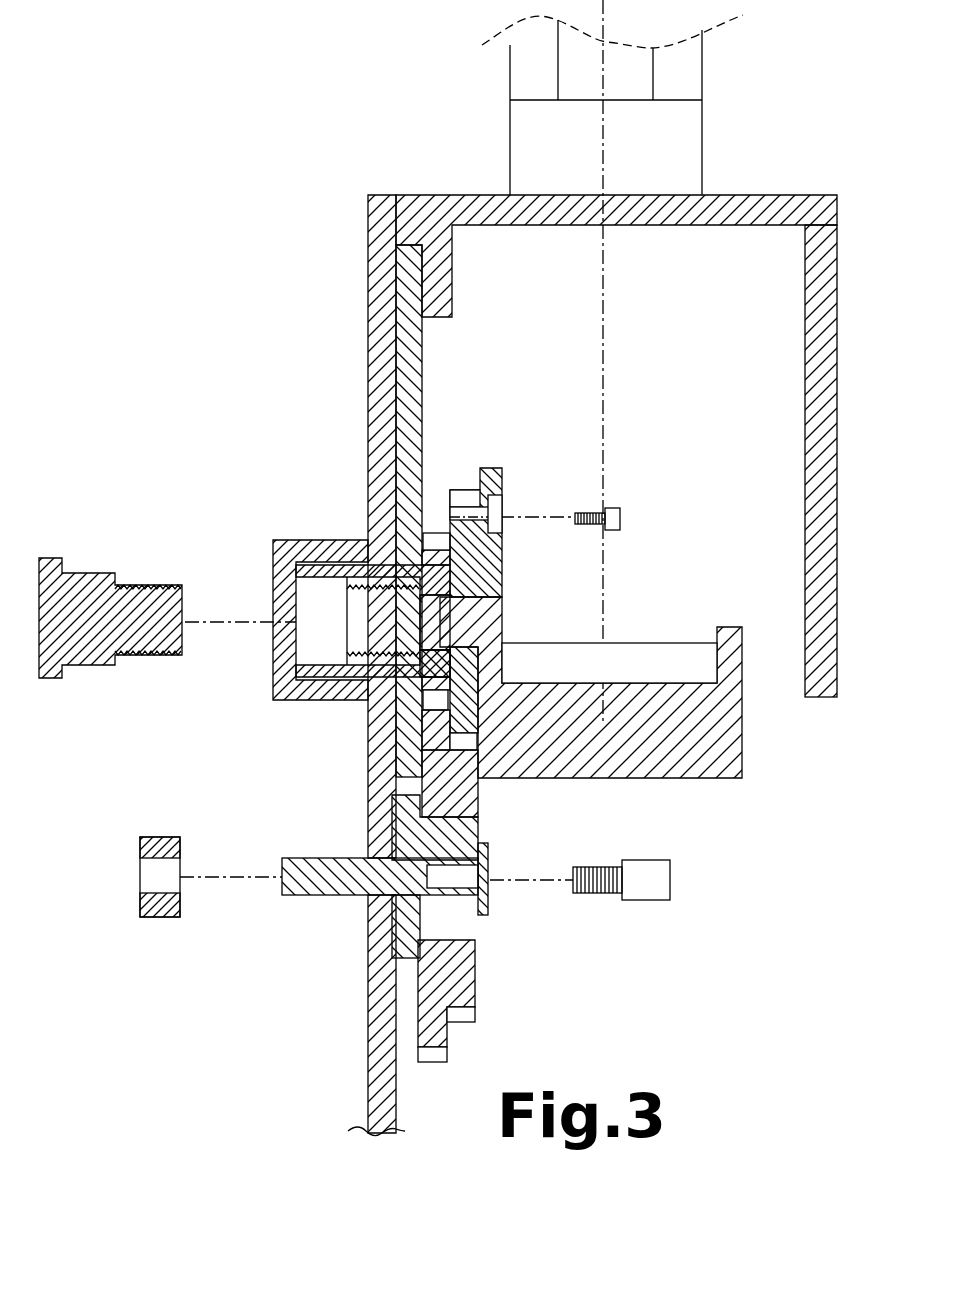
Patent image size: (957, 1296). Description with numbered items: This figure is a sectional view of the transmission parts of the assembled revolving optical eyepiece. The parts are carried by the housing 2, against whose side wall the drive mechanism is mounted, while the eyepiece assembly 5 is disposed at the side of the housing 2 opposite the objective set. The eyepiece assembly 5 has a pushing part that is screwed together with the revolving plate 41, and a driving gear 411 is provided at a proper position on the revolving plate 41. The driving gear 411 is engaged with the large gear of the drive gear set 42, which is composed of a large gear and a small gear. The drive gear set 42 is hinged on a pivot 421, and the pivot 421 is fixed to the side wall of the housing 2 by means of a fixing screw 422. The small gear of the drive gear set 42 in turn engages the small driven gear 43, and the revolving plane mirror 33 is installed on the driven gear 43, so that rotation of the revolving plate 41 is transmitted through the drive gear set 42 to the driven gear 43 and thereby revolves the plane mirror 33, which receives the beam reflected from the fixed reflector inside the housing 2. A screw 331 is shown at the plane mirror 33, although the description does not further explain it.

The machine wall 2 is at (368, 195).
The shaft 5 is at (672, 150).
The sleeve 41 is at (407, 267).
The annular groove 411 is at (428, 545).
The retaining ring 43 is at (457, 498).
The screw 331 is at (622, 512).
The hub 33 is at (588, 662).
The bushing 42 is at (457, 992).
The flange 421 is at (320, 878).
The screw 422 is at (642, 883).